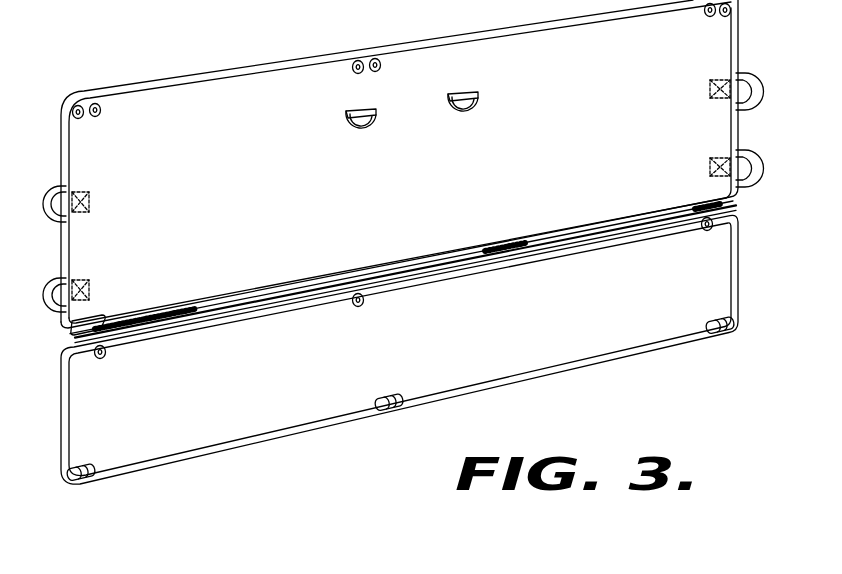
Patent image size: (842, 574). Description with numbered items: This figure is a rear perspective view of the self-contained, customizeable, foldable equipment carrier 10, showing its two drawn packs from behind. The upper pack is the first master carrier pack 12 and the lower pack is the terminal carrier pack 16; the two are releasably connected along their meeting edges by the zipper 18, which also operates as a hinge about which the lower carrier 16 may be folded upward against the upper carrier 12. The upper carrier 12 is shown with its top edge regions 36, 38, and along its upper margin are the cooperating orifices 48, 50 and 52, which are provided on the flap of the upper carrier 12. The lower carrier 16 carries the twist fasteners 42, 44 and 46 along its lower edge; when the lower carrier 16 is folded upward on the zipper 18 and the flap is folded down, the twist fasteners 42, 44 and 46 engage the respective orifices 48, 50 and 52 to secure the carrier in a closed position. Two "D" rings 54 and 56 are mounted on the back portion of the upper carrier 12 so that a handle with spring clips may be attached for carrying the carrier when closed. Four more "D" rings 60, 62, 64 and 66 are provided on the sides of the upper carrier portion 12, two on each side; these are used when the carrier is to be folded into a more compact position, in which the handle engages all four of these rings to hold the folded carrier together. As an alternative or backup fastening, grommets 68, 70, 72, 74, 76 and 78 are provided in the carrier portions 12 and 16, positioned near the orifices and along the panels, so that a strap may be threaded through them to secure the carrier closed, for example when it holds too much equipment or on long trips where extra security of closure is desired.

The equipment carrier 10 is at (57, 84).
The first master carrier pack 12 is at (61, 248).
The terminal carrier pack 16 is at (61, 401).
The zipper 18 is at (72, 330).
The top edge of first panel 36 is at (228, 6).
The top edge portion 38 is at (540, 58).
The twist fastener 42 is at (80, 483).
The twist fastener 44 is at (388, 412).
The twist fastener 46 is at (726, 340).
The orifice 48 is at (85, 107).
The orifice 50 is at (382, 62).
The orifice 52 is at (729, 18).
The "D" ring 54 is at (352, 129).
The "D" ring 56 is at (478, 124).
The "D" ring 60 is at (728, 113).
The "D" ring 62 is at (724, 180).
The "D" ring 64 is at (78, 220).
The "D" ring 66 is at (78, 306).
The grommet 68 is at (104, 109).
The grommet 70 is at (354, 61).
The grommet 72 is at (705, 18).
The grommet 74 is at (106, 355).
The grommet 76 is at (368, 302).
The grommet 78 is at (706, 232).